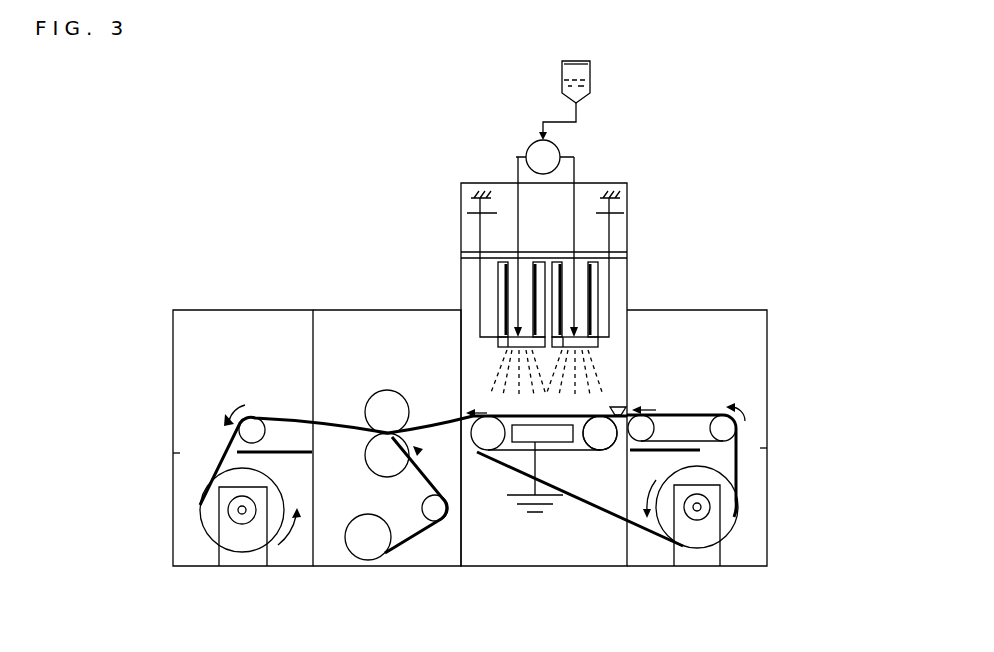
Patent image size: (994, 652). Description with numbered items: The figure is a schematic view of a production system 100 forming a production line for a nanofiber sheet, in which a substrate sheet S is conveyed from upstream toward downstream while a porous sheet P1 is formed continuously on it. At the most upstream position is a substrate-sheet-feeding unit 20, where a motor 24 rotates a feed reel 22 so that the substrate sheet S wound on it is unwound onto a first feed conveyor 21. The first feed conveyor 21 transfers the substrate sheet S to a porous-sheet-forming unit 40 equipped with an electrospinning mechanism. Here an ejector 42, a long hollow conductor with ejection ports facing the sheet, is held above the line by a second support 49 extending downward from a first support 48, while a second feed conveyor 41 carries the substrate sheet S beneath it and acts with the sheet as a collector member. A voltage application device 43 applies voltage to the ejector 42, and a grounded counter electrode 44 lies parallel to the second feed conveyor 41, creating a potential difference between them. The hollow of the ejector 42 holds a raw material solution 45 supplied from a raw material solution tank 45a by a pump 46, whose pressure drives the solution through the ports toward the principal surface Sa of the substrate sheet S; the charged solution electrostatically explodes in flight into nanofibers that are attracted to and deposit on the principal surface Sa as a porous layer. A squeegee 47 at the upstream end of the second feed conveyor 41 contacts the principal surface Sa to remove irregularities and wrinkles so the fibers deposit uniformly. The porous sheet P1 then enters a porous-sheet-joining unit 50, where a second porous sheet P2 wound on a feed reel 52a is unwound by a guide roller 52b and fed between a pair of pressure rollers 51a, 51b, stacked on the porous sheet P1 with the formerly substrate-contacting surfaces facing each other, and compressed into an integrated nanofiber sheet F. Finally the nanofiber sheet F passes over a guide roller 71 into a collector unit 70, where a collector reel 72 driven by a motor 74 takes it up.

The production system 100 is at (837, 95).
The collector unit 70 is at (196, 574).
The collector reel 72 is at (240, 512).
The motor 74 is at (250, 556).
The guide roller 71 is at (254, 425).
The nanofiber sheet F is at (220, 458).
The porous-sheet-joining unit 50 is at (373, 574).
The pressure roller 51a is at (387, 391).
The pressure roller 51b is at (365, 455).
The feed reel 52a is at (352, 550).
The guide roller 52b is at (424, 506).
The porous sheet P1 is at (432, 422).
The second porous sheet P2 is at (414, 536).
The porous-sheet-forming unit 40 is at (521, 574).
The second feed conveyor 41 is at (583, 452).
The counter electrode 44 is at (553, 440).
The ejector 42 is at (498, 340).
The second support 49 is at (538, 292).
The first support 48 is at (617, 257).
The voltage application device 43 is at (470, 215).
The pump 46 is at (560, 150).
The raw material solution 45 is at (590, 96).
The raw material solution tank 45a is at (578, 68).
The squeegee 47 is at (617, 406).
The substrate-sheet-feeding unit 20 is at (658, 574).
The first feed conveyor 21 is at (676, 446).
The feed reel 22 is at (700, 510).
The motor 24 is at (708, 556).
The substrate sheet S is at (740, 470).
The principal surface Sa is at (695, 413).